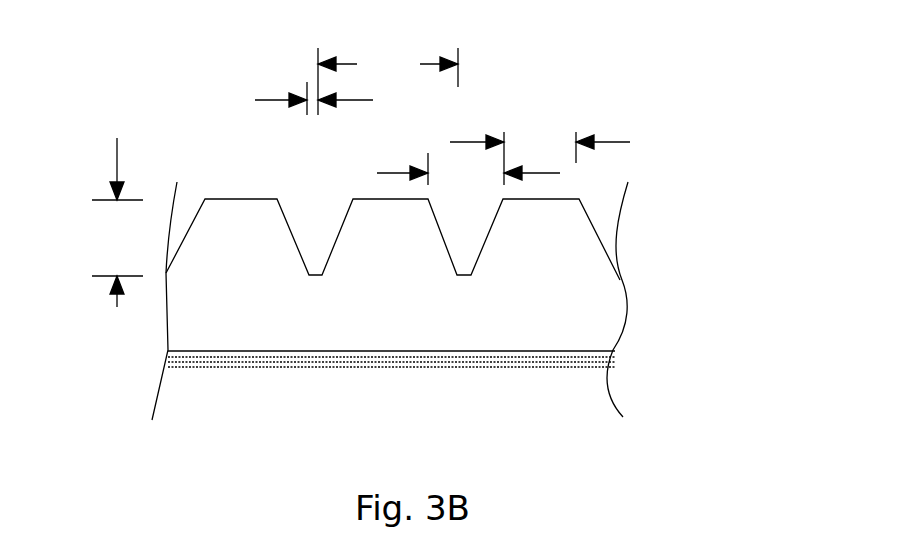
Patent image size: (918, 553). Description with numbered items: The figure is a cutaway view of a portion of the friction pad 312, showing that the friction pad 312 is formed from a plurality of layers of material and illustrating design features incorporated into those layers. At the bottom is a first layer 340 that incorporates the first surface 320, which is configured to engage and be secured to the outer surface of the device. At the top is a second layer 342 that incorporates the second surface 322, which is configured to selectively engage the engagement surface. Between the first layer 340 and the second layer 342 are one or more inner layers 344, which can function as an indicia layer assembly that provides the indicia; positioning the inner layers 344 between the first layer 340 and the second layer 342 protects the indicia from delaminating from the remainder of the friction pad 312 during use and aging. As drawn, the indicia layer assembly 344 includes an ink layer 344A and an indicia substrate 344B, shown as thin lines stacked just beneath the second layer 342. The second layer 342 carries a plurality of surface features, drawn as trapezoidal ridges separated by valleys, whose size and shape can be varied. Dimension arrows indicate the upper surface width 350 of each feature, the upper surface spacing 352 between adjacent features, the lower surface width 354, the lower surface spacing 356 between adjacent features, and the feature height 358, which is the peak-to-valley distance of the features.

The friction pad 312 is at (745, 172).
The first surface 320 is at (294, 319).
The second surface 322 is at (393, 206).
The first layer 340 is at (593, 366).
The second layer 342 is at (615, 297).
The inner layers 344 is at (160, 361).
The ink layer 344A is at (612, 353).
The indicia substrate 344B is at (612, 362).
The upper surface width 350 is at (540, 156).
The upper surface spacing 352 is at (468, 170).
The lower surface width 354 is at (388, 81).
The lower surface spacing 356 is at (291, 80).
The feature height 358 is at (117, 222).